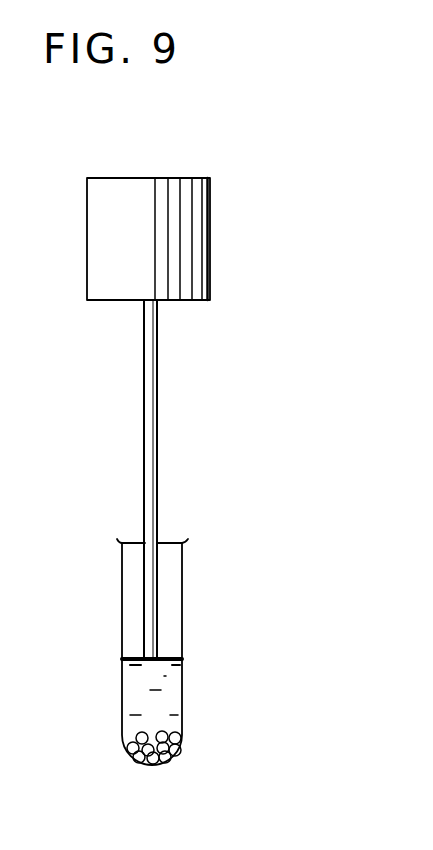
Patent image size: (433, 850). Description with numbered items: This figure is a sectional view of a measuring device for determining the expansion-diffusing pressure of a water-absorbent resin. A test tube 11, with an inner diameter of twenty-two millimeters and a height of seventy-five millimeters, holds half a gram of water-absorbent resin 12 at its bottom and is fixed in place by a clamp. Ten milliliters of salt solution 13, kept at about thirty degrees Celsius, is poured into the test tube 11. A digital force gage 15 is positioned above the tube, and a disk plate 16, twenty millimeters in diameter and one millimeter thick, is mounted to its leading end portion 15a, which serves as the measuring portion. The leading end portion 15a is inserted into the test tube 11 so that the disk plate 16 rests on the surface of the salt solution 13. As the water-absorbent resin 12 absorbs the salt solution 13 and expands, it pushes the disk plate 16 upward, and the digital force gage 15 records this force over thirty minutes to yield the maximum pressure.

The digital force gage 15 is at (196, 251).
The leading end portion 15a is at (146, 653).
The test tube 11 is at (184, 641).
The disk plate 16 is at (184, 658).
The salt solution 13 is at (183, 708).
The water-absorbent resin 12 is at (130, 746).